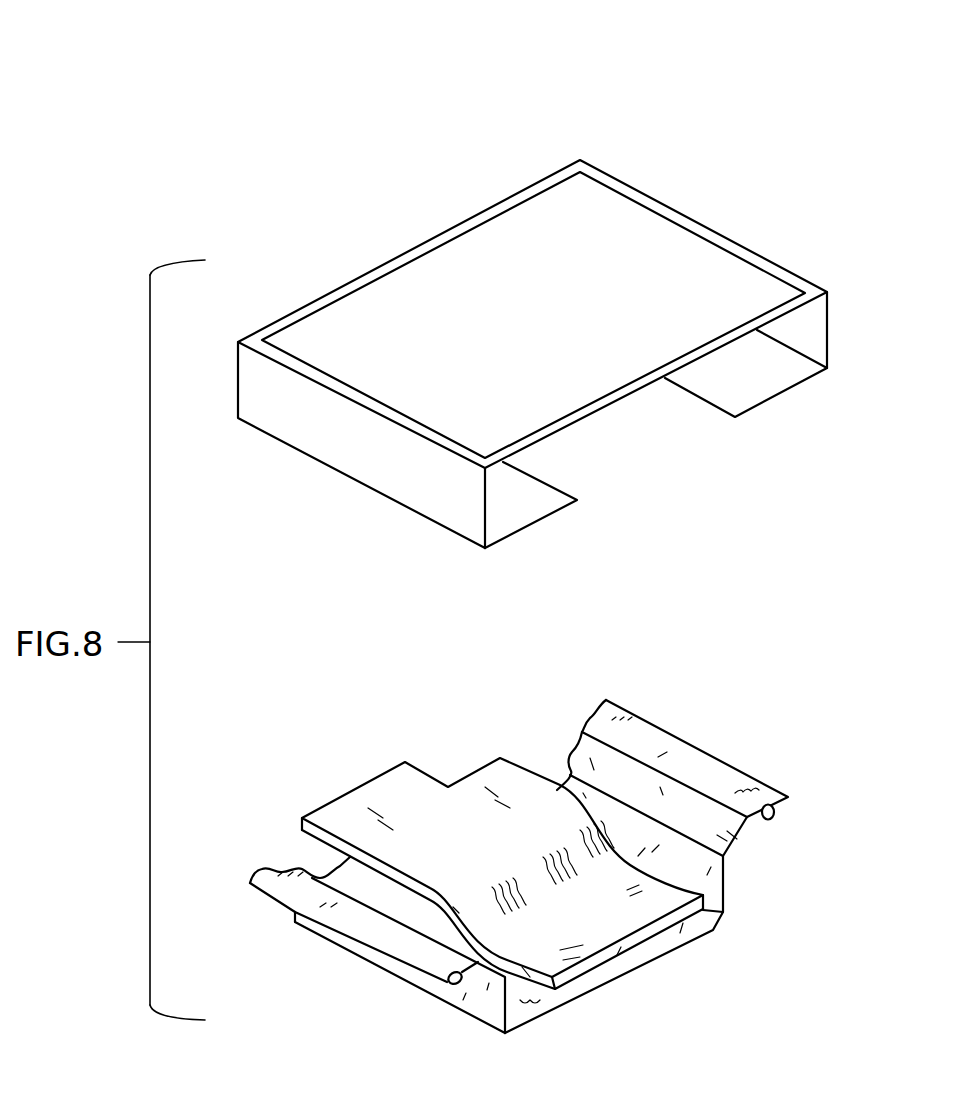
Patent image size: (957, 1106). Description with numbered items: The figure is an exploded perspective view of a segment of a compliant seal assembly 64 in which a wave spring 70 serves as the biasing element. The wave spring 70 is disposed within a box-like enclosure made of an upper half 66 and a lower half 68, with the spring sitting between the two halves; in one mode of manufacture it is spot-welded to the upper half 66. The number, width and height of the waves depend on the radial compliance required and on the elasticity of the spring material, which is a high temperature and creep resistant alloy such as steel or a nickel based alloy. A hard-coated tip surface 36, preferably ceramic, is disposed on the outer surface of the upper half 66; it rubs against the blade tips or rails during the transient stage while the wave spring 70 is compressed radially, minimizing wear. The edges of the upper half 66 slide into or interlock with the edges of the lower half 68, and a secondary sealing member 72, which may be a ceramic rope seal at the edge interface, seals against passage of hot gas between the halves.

The compliant seal assembly segment 64 is at (662, 56).
The hard-coated tip surface 36 is at (400, 280).
The upper half of the enclosure 66 is at (829, 326).
The lower half of the enclosure 68 is at (693, 746).
The wave spring 70 is at (365, 783).
The secondary sealing member 72 is at (775, 812).